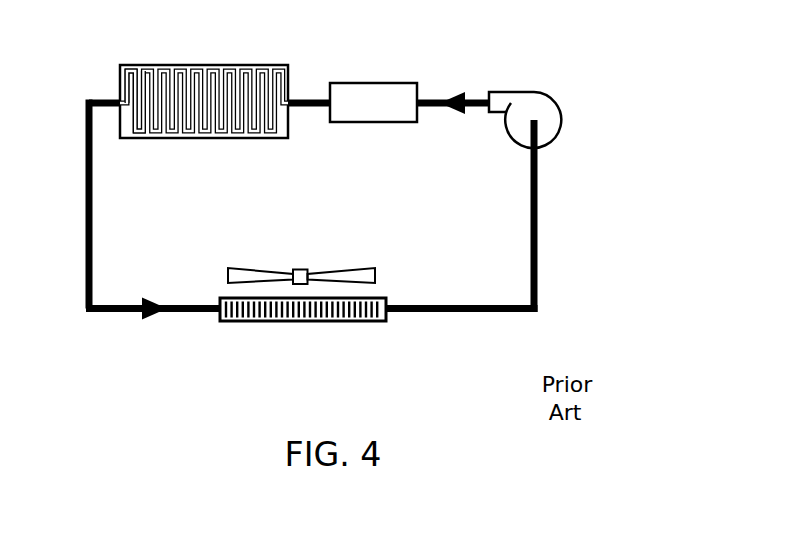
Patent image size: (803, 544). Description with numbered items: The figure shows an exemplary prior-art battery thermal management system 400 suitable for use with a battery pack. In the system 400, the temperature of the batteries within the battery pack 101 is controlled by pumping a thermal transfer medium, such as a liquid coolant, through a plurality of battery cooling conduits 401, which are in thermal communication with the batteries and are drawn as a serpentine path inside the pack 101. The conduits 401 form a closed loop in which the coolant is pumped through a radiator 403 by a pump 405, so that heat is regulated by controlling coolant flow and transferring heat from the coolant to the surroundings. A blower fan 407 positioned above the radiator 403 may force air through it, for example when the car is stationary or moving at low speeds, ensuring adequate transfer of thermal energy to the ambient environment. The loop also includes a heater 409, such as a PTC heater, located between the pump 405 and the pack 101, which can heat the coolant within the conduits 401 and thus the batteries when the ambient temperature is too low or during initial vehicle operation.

The battery thermal management system 400 is at (558, 55).
The battery pack 101 is at (188, 64).
The battery cooling conduits 401 is at (143, 77).
The heater 409 is at (363, 83).
The pump 405 is at (507, 112).
The radiator 403 is at (265, 323).
The blower fan 407 is at (303, 269).